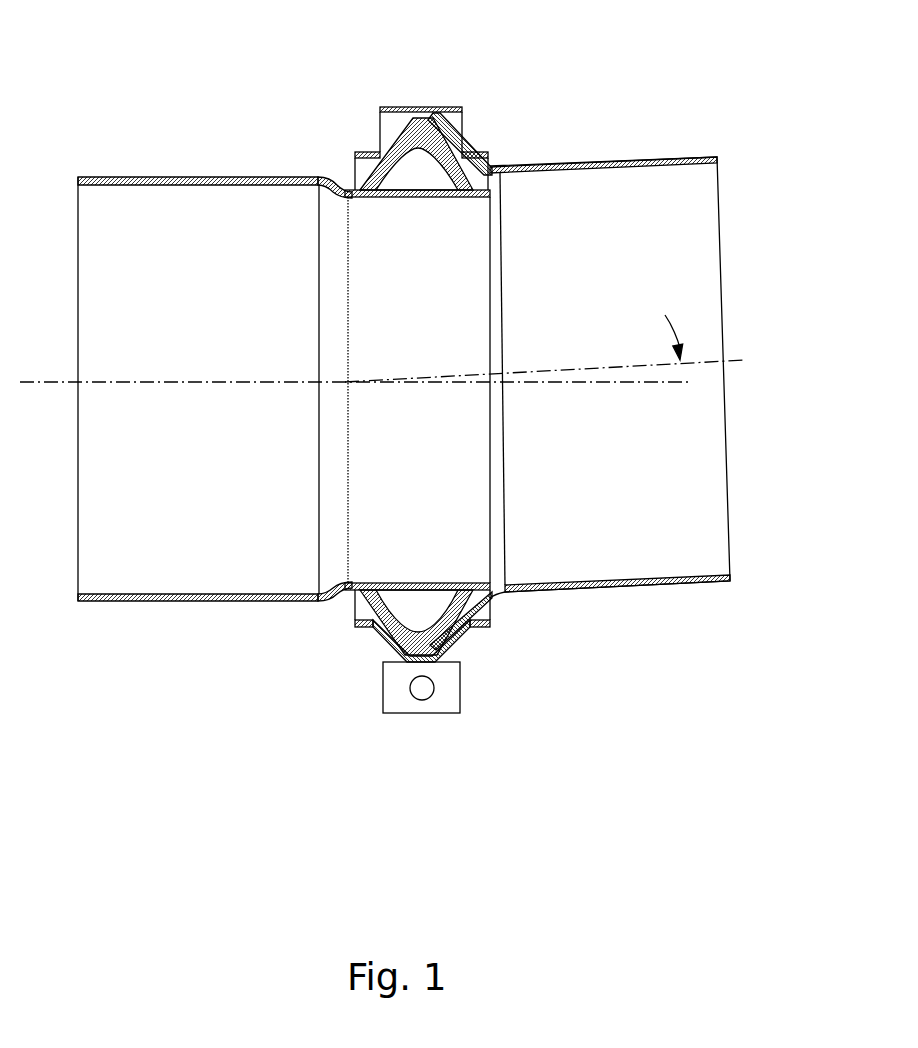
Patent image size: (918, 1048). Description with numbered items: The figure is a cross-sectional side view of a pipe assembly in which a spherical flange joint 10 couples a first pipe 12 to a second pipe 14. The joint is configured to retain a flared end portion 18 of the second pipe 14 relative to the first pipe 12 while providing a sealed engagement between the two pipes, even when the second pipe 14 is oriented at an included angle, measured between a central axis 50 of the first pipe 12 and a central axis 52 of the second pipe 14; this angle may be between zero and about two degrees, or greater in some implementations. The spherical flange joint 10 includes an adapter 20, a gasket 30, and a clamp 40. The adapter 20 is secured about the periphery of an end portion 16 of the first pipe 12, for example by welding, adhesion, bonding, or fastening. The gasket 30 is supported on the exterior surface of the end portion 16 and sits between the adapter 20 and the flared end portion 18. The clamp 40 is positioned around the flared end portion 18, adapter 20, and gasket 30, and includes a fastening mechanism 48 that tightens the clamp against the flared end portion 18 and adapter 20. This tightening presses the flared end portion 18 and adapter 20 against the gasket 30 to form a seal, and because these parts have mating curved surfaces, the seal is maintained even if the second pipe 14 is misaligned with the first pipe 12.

The spherical flange joint 10 is at (473, 68).
The first pipe 12 is at (196, 165).
The second pipe 14 is at (608, 150).
The end portion 16 is at (413, 198).
The flared end portion 18 is at (463, 146).
The adapter 20 is at (344, 183).
The gasket 30 is at (463, 123).
The clamp 40 is at (383, 95).
The fastening mechanism 48 is at (460, 690).
The central axis 50 is at (223, 382).
The central axis 52 is at (580, 367).